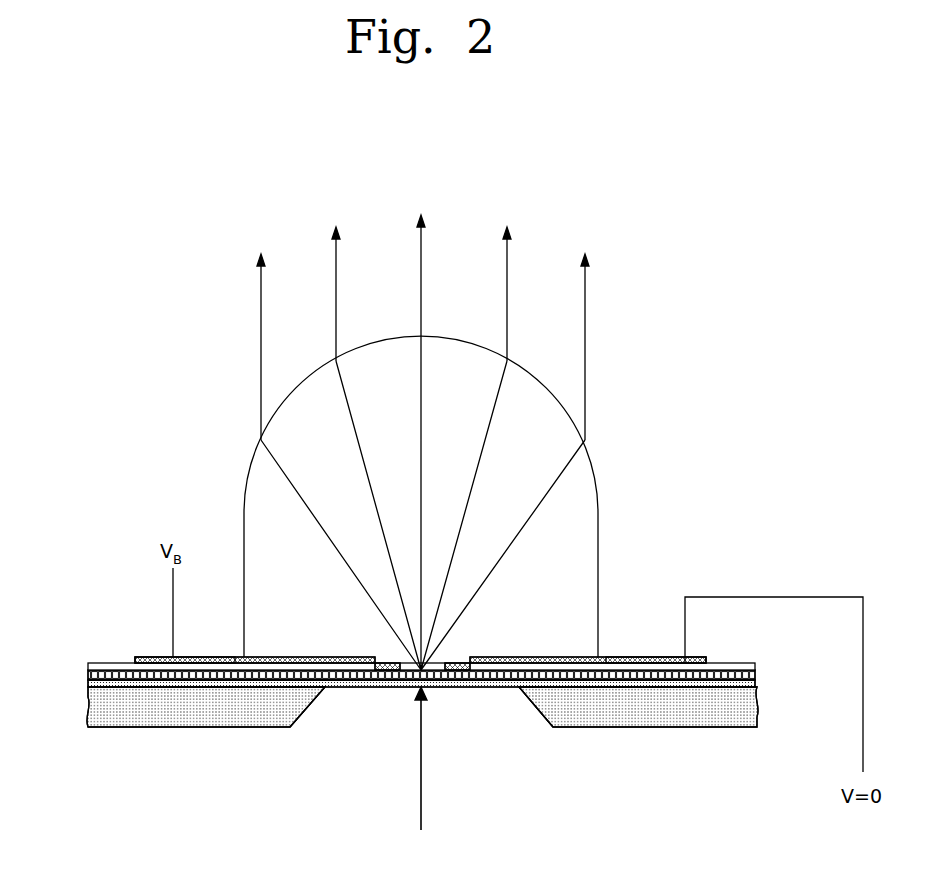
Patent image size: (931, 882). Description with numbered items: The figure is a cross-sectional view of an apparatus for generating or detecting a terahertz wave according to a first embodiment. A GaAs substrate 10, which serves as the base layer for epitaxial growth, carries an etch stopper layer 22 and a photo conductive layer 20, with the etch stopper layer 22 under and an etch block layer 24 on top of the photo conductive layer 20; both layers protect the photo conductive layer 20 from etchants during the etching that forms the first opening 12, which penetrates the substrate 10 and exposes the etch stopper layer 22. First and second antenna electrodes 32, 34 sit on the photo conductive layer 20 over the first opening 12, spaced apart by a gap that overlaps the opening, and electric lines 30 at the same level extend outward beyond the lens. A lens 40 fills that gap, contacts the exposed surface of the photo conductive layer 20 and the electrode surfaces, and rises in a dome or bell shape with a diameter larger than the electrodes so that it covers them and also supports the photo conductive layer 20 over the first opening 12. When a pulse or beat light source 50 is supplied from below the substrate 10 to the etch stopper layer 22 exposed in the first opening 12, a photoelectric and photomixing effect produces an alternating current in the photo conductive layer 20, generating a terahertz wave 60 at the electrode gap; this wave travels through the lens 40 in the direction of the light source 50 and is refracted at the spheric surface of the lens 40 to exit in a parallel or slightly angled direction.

The substrate 10 is at (757, 713).
The first opening 12 is at (362, 722).
The photo conductive layer 20 is at (755, 672).
The etch stopper layer 22 is at (755, 683).
The etch block layer 24 is at (752, 662).
The electric line 30 is at (148, 656).
The first antenna electrode 32 is at (547, 656).
The second antenna electrode 34 is at (291, 656).
The lens 40 is at (583, 517).
The pulse or beat light source 50 is at (421, 774).
The terahertz wave 60 is at (585, 303).